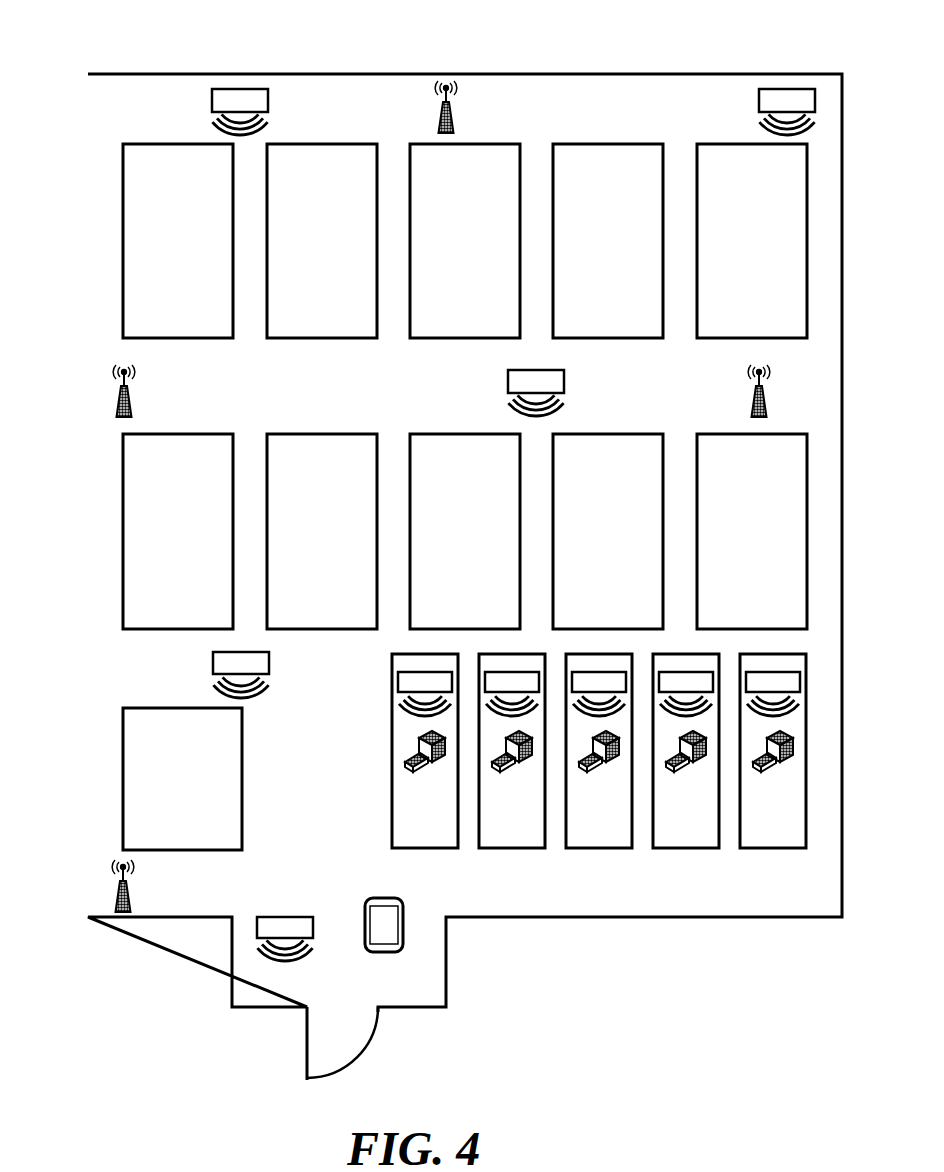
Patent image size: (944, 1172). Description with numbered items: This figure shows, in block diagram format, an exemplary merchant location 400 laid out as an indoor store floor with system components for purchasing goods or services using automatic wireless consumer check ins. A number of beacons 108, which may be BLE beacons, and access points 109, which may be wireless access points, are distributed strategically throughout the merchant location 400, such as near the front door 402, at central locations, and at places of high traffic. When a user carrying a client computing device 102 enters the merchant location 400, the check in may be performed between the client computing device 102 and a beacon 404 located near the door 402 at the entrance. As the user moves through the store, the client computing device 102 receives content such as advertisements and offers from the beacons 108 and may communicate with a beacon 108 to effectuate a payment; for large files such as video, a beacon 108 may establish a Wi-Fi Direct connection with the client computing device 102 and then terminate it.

The merchant location 400 is at (128, 60).
The front door 402 is at (348, 1068).
The beacon 404 is at (285, 939).
The client computing device 102 is at (384, 952).
The beacons 108 is at (513, 468).
The access points 109 is at (462, 496).